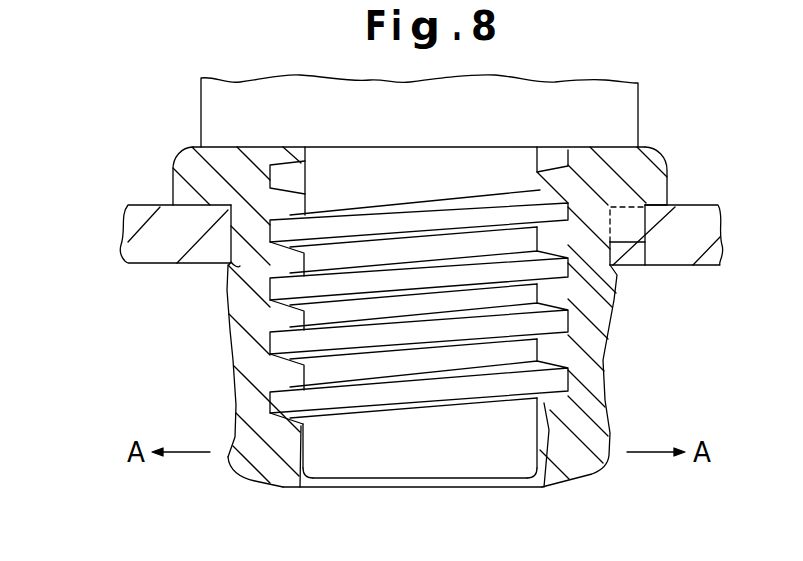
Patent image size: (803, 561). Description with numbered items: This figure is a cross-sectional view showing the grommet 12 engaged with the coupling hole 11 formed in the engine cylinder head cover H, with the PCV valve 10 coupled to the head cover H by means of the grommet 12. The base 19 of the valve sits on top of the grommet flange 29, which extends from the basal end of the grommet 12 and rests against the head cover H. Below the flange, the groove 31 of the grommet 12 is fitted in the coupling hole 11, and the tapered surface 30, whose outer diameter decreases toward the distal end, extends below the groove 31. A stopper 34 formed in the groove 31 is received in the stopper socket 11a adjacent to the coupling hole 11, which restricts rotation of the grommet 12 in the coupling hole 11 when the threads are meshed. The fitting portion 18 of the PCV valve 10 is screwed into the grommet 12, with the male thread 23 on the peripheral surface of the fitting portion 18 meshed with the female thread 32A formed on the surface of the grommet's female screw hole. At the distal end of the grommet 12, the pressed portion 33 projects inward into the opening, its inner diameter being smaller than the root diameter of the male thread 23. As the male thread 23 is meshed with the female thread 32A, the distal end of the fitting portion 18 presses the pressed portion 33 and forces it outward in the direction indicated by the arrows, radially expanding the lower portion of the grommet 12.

The PCV valve 10 is at (410, 107).
The base 19 is at (633, 119).
The grommet flange 29 is at (650, 162).
The stopper socket 11a is at (643, 208).
The engine cylinder head cover H is at (137, 212).
The groove 31 is at (226, 263).
The coupling hole 11 is at (439, 335).
The tapered surface 30 is at (227, 352).
The stopper 34 is at (647, 262).
The male thread 23 is at (563, 323).
The female thread 32A is at (565, 389).
The grommet 12 is at (229, 466).
The pressed portion 33 is at (283, 476).
The fitting portion 18 is at (485, 468).